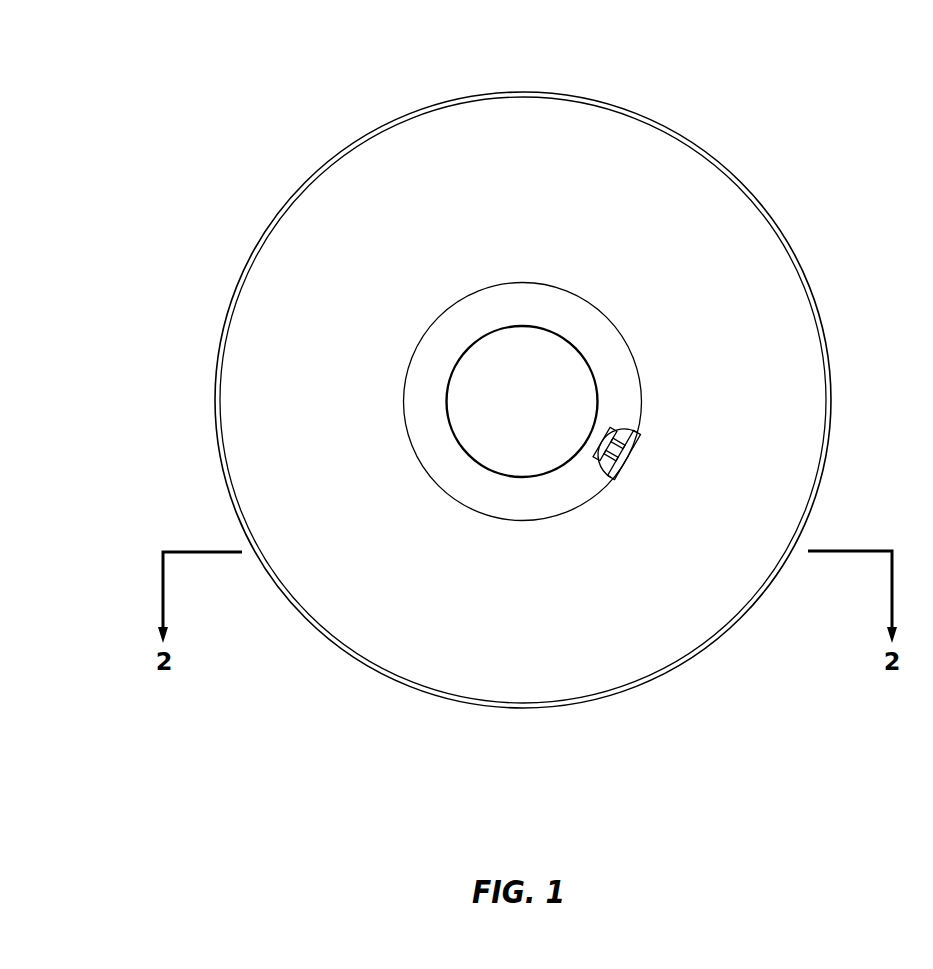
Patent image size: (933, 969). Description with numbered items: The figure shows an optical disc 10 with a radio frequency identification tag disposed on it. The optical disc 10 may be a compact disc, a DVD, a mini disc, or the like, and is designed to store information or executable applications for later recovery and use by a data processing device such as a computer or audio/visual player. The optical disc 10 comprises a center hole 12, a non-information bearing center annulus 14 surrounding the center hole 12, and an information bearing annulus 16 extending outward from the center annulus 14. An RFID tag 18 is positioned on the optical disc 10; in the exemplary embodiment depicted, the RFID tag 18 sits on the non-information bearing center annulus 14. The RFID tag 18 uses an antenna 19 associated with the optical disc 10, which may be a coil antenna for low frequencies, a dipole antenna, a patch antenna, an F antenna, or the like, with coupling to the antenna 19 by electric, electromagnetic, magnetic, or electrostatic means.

The optical disc 10 is at (781, 131).
The center hole 12 is at (468, 347).
The non-information bearing center annulus 14 is at (550, 287).
The information bearing annulus 16 is at (467, 131).
The radio frequency identification (RFID) tag 18 is at (610, 437).
The antenna 19 is at (643, 438).